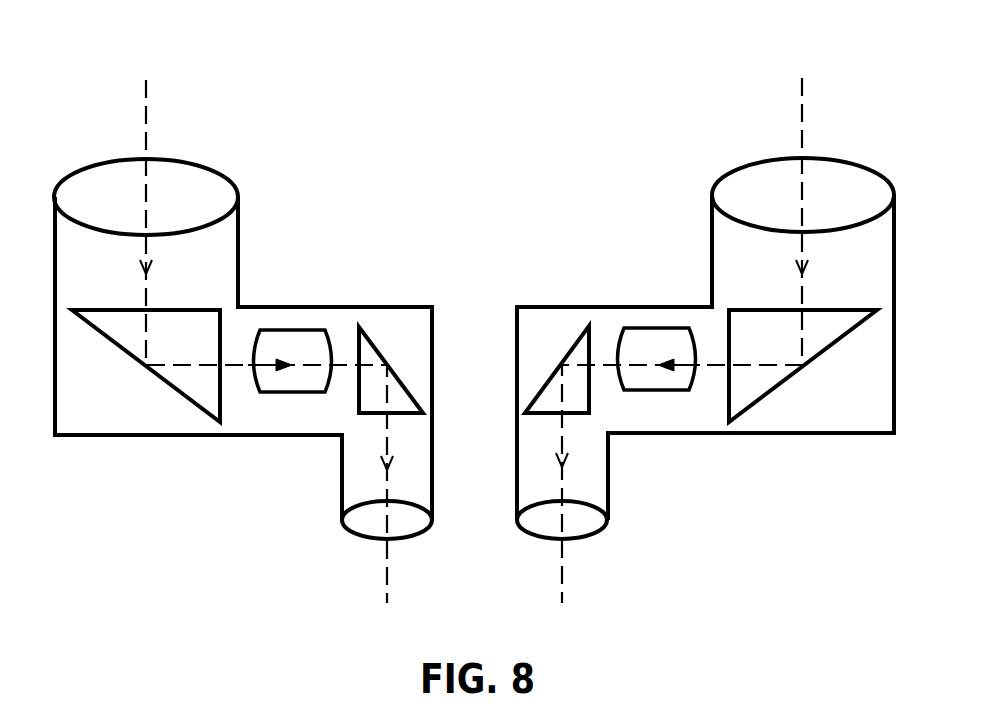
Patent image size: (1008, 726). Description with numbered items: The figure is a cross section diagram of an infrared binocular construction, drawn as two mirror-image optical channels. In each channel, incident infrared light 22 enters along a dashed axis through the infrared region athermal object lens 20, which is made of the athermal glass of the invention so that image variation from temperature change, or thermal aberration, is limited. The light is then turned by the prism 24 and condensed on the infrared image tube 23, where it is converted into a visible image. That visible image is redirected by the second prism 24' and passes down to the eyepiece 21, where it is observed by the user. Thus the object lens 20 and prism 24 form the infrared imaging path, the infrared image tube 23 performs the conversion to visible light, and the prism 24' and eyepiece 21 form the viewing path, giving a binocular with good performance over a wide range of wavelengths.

The infrared region athermal object lens 20 is at (203, 163).
The eyepiece 21 is at (358, 533).
The incident infrared light 22 is at (143, 97).
The infrared image tube 23 is at (287, 330).
The prism 24 is at (474, 396).
The prism 24' is at (476, 403).